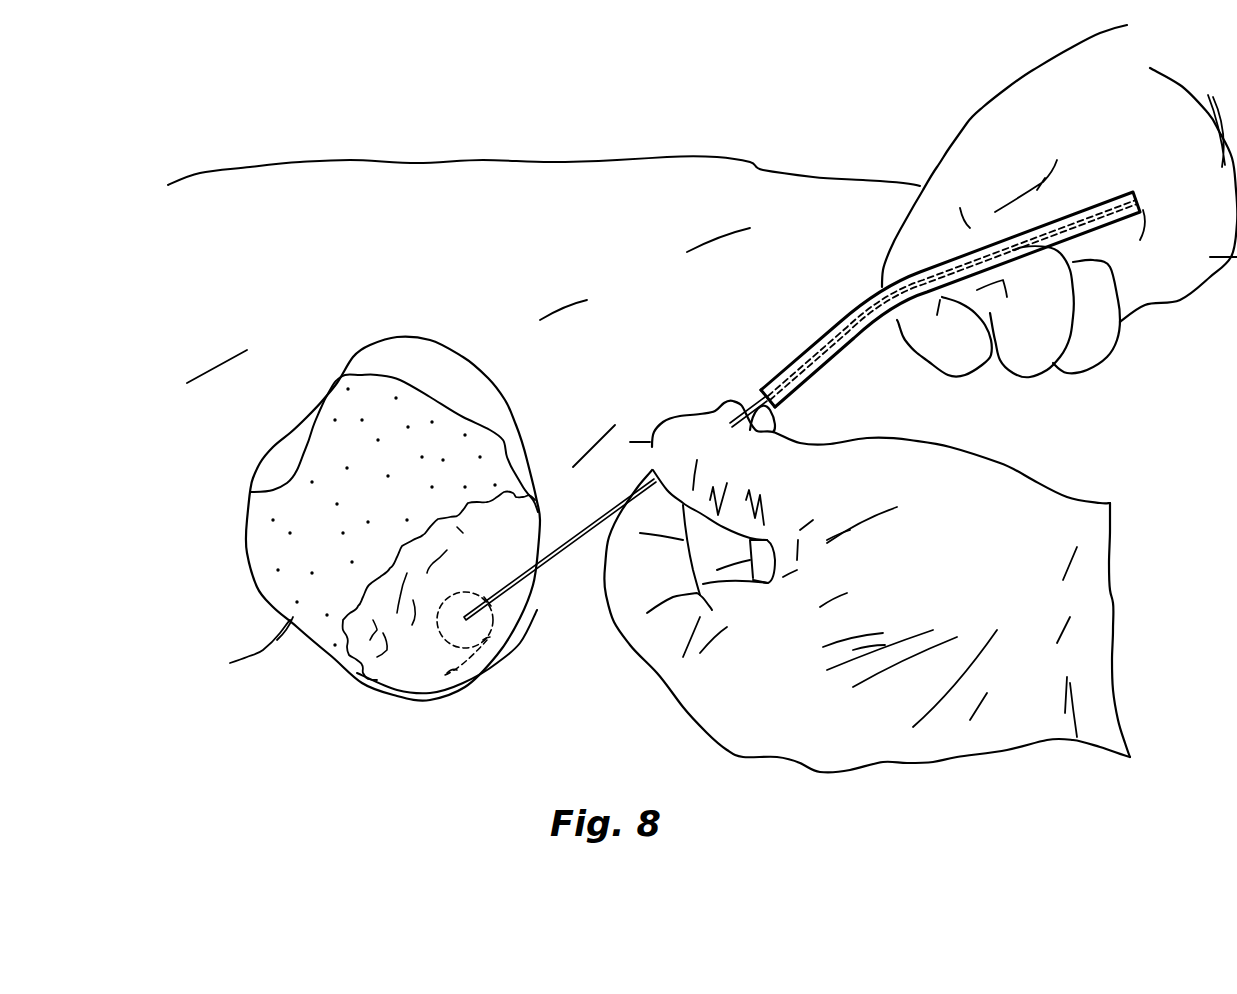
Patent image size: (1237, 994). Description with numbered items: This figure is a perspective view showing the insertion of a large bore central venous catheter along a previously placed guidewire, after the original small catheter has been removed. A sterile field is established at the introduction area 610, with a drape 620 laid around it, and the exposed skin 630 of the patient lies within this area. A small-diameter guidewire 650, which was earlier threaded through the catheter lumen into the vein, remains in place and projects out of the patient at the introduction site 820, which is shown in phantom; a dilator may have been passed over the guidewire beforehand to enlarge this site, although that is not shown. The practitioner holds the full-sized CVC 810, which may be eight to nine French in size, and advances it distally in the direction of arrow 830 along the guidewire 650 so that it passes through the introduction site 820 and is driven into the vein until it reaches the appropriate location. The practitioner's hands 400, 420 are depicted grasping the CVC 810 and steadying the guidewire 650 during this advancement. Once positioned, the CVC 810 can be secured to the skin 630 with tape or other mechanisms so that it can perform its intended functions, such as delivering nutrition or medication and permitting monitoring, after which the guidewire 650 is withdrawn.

The surgeon's hand 400 is at (1043, 565).
The surgeon's hand 420 is at (1178, 152).
The introduction area 610 is at (420, 669).
The drape 620 is at (527, 381).
The skin 630 is at (447, 692).
The guidewire 650 is at (557, 554).
The CVC 810 is at (841, 352).
The introduction site 820 is at (493, 653).
The arrow 830 is at (772, 352).